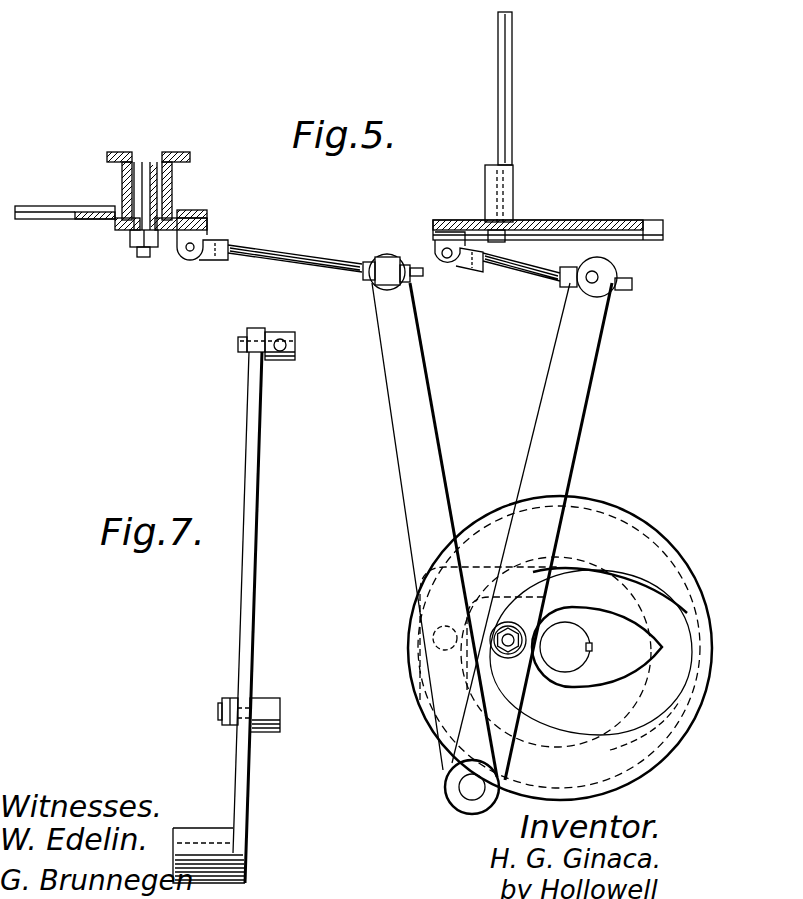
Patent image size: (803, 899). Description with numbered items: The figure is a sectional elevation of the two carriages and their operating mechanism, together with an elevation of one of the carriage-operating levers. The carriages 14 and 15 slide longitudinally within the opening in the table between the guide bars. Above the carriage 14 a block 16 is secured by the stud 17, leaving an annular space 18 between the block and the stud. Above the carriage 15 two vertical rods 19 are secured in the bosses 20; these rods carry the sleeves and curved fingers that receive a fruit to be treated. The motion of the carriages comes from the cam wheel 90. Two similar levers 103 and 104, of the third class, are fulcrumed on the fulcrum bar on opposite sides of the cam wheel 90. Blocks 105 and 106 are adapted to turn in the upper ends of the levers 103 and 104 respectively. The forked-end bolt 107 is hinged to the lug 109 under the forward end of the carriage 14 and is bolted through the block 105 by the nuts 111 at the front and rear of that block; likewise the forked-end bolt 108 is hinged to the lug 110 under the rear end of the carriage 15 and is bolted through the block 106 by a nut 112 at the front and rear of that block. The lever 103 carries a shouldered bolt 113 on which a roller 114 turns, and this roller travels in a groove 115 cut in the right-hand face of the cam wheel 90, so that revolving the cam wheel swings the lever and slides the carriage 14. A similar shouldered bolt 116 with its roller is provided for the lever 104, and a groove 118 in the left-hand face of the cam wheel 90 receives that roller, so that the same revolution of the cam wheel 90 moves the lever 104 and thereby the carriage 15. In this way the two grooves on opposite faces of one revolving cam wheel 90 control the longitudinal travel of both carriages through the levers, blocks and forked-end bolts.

In FIG. 5, the carriage 14 is at (46, 206).
In FIG. 5, the carriage 15 is at (662, 231).
In FIG. 5, the block 16 is at (186, 156).
In FIG. 5, the stud 17 is at (151, 160).
In FIG. 5, the annular space 18 is at (135, 160).
In FIG. 5, the vertical rod 19 is at (512, 112).
In FIG. 5, the boss 20 is at (515, 186).
In FIG. 5, the cam wheel 90 is at (704, 590).
In FIG. 5, the lever 103 is at (428, 394).
In FIG. 7, the lever 103 is at (257, 512).
In FIG. 5, the lever 104 is at (640, 405).
In FIG. 5, the block 105 is at (380, 276).
In FIG. 7, the block 105 is at (283, 360).
In FIG. 5, the block 106 is at (606, 278).
In FIG. 5, the forked-end bolt 107 is at (285, 262).
In FIG. 5, the forked-end bolt 108 is at (520, 270).
In FIG. 5, the lug 109 is at (205, 228).
In FIG. 5, the lug 110 is at (440, 238).
In FIG. 5, the nut 111 is at (370, 262).
In FIG. 5, the nut 112 is at (572, 285).
In FIG. 7, the shouldered bolt 113 is at (218, 712).
In FIG. 5, the roller 114 is at (435, 635).
In FIG. 7, the roller 114 is at (272, 698).
In FIG. 5, the groove 115 is at (458, 580).
In FIG. 5, the shouldered bolt 116 is at (520, 641).
In FIG. 5, the groove 118 is at (665, 700).